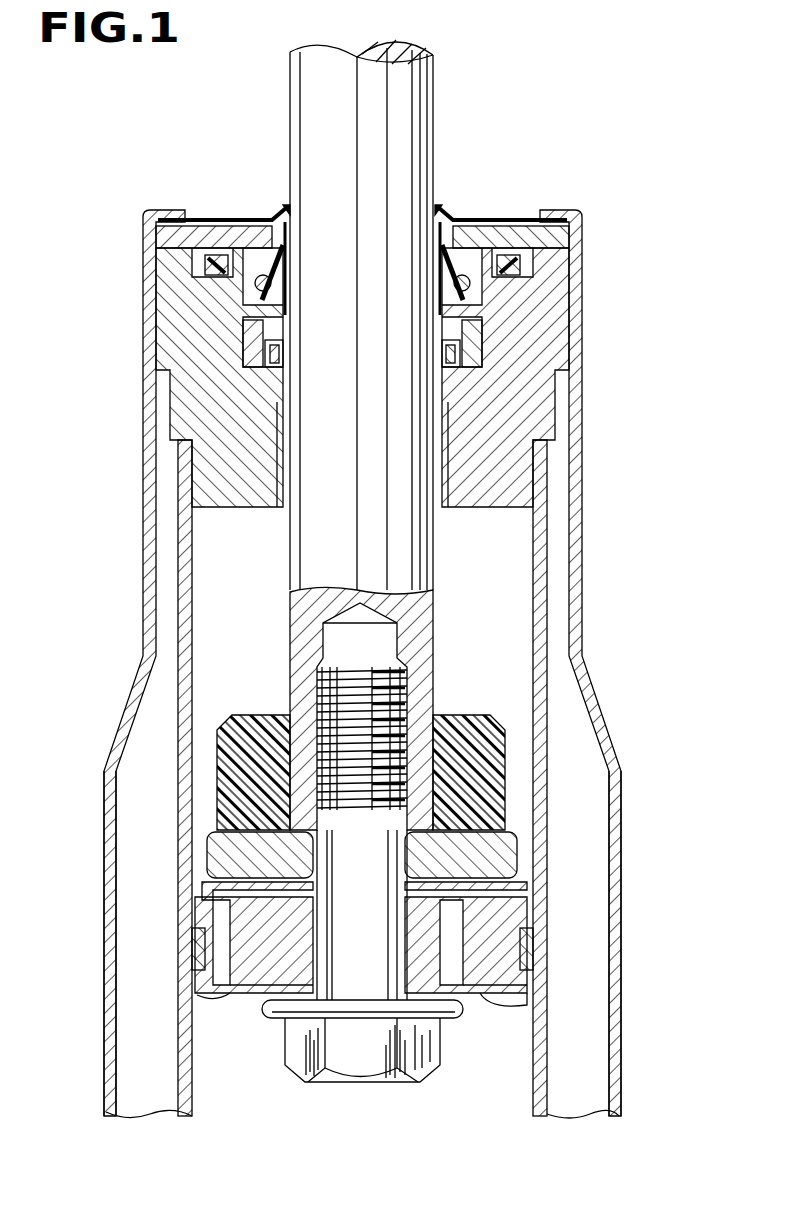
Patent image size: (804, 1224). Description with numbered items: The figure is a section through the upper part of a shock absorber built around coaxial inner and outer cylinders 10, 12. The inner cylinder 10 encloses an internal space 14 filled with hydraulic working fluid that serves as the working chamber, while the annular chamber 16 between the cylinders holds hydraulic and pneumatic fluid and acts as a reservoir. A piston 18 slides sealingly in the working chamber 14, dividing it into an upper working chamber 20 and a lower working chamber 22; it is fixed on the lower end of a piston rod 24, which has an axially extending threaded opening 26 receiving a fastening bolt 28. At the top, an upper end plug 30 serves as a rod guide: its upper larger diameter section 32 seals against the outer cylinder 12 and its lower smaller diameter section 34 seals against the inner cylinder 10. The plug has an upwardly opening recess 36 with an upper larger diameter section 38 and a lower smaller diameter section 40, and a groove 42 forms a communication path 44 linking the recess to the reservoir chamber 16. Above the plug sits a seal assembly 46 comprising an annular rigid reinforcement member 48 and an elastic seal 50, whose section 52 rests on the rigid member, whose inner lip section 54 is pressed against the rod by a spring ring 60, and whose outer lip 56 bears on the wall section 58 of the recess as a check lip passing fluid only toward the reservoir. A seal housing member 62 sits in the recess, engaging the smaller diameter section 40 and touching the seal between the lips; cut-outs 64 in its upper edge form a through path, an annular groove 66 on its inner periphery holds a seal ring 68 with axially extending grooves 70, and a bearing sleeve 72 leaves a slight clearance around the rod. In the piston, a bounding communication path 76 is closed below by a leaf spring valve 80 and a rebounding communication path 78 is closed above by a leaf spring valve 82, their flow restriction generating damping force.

The inner cylinder 10 is at (550, 533).
The outer cylinder 12 is at (583, 604).
The internal space 14 is at (526, 672).
The annular chamber 16 is at (596, 1043).
The piston 18 is at (515, 916).
The upper working chamber 20 is at (215, 586).
The lower working chamber 22 is at (217, 1066).
The piston rod 24 is at (423, 127).
The threaded opening 26 is at (403, 747).
The fastening bolt 28 is at (340, 917).
The upper end plug 30 is at (517, 387).
The upper larger diameter section 32 is at (548, 290).
The lower smaller diameter section 34 is at (503, 463).
The recess 36 is at (262, 352).
The upper larger diameter section 38 is at (537, 218).
The lower smaller diameter section 40 is at (530, 345).
The groove 42 is at (583, 236).
The communication path 44 is at (560, 268).
The seal assembly 46 is at (253, 213).
The annular rigid reinforcement member 48 is at (160, 240).
The elastic seal 50 is at (481, 212).
The section 52 is at (205, 218).
The inner lip section 54 is at (287, 203).
The outer lip 56 is at (215, 280).
The wall section 58 is at (248, 292).
The spring ring 60 is at (262, 318).
The seal housing member 62 is at (482, 307).
The cut-outs 64 is at (488, 222).
The annular groove 66 is at (275, 372).
The seal ring 68 is at (265, 400).
The axially extending grooves 70 is at (190, 460).
The bearing sleeve 72 is at (443, 427).
The bounding communication path 76 is at (525, 950).
The rebounding communication path 78 is at (193, 968).
The leaf spring valve 80 is at (510, 890).
The leaf spring valve 82 is at (520, 1012).